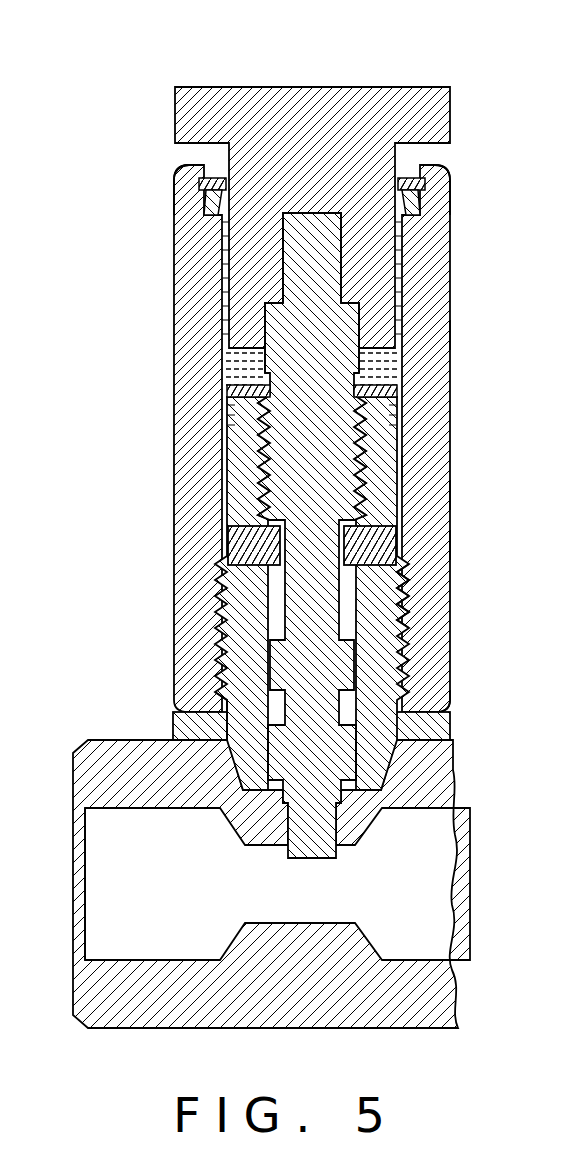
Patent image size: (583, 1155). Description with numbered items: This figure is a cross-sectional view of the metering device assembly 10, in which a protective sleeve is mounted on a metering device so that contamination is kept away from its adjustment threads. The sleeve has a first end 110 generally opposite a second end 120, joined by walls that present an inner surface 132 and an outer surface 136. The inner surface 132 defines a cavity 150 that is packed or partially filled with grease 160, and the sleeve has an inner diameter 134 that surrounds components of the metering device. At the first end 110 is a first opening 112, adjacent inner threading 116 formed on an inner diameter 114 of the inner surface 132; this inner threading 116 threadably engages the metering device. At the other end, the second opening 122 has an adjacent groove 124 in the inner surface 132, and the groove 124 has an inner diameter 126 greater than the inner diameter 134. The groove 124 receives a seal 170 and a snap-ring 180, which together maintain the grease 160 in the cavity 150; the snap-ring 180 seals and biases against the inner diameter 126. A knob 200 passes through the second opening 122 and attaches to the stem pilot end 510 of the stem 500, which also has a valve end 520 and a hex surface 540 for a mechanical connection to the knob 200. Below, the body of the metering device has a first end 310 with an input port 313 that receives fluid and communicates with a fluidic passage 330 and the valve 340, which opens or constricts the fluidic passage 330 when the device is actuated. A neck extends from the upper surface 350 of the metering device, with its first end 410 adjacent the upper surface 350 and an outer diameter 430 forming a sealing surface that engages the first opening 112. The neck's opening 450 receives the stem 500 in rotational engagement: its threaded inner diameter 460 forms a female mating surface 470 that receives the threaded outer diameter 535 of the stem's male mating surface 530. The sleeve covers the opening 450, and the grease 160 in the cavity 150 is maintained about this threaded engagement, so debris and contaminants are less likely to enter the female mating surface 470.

The metering device assembly 10 is at (88, 393).
The first end 110 is at (176, 668).
The first opening 112 is at (452, 722).
The inner diameter 114 is at (405, 612).
The inner threading 116 is at (412, 580).
The second end 120 is at (176, 185).
The second opening 122 is at (418, 168).
The groove 124 is at (440, 186).
The inner diameter 126 is at (425, 210).
The inner surface 132 is at (452, 496).
The inner diameter 134 is at (425, 472).
The outer surface 136 is at (452, 546).
The cavity 150 is at (452, 335).
The grease 160 is at (262, 345).
The seal 170 is at (180, 213).
The snap-ring 180 is at (190, 166).
The knob 200 is at (318, 87).
The first end 310 is at (73, 758).
The input port 313 is at (73, 878).
The fluidic passage 330 is at (263, 910).
The valve 340 is at (322, 840).
The upper surface 350 is at (125, 740).
The first end 410 is at (183, 712).
The outer diameter 430 is at (215, 478).
The opening 450 is at (238, 362).
The threaded inner diameter 460 is at (248, 394).
The female mating surface 470 is at (250, 530).
The stem 500 is at (340, 405).
The stem pilot end 510 is at (318, 243).
The valve end 520 is at (315, 712).
The male mating surface 530 is at (395, 400).
The threaded outer diameter 535 is at (405, 442).
The hex surface 540 is at (360, 323).